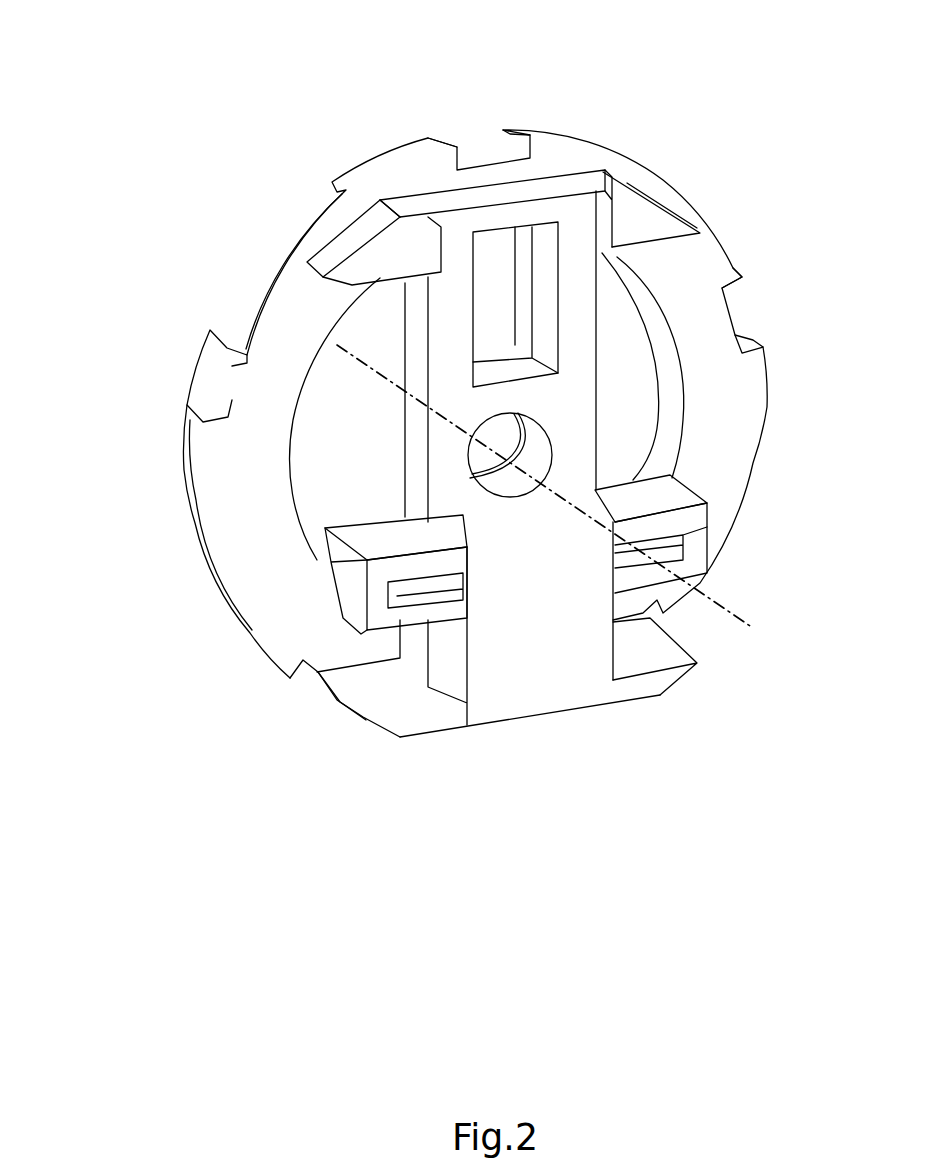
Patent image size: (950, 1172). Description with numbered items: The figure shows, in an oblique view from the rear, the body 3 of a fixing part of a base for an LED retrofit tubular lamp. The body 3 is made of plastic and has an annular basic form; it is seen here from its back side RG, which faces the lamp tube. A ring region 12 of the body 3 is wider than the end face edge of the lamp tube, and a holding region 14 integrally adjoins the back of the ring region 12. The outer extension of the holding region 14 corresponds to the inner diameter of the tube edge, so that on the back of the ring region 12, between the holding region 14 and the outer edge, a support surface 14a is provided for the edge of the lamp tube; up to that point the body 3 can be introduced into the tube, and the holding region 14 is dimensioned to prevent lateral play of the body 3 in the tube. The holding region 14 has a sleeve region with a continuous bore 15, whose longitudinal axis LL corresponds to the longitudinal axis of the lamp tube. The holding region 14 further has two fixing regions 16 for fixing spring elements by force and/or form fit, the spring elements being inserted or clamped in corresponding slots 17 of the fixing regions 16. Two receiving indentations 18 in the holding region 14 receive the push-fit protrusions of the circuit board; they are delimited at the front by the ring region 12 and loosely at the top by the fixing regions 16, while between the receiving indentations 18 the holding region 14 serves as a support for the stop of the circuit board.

The body 3 is at (128, 86).
The ring region 12 is at (753, 463).
The back side RG is at (717, 268).
The holding region 14 is at (418, 395).
The support surface 14a is at (647, 183).
The bore 15 is at (553, 438).
The fixing region 16 is at (350, 577).
The slot 17 is at (460, 580).
The receiving indentation 18 is at (428, 700).
The longitudinal axis LL is at (743, 622).